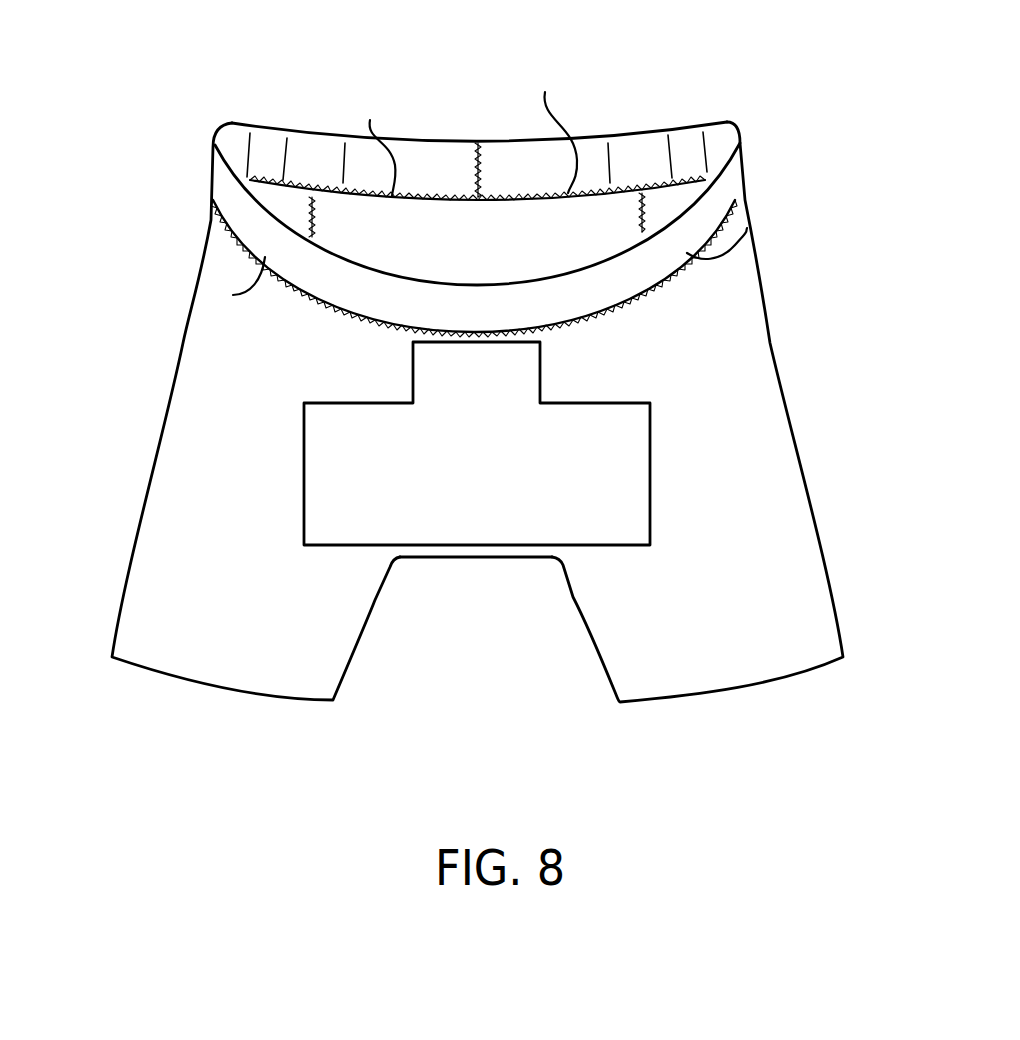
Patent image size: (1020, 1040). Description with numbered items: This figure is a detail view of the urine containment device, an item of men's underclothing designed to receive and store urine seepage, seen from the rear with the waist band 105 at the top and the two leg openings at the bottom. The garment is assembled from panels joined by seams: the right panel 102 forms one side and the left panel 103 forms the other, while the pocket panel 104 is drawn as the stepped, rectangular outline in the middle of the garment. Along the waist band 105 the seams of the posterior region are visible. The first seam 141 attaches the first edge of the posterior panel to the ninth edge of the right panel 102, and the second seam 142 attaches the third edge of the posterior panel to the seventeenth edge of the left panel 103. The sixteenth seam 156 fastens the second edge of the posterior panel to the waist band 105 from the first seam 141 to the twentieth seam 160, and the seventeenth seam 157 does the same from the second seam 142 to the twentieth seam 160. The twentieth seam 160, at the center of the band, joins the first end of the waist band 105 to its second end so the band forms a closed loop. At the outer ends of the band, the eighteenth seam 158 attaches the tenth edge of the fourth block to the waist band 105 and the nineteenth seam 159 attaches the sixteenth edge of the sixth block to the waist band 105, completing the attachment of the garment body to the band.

The right panel 102 is at (185, 632).
The left panel 103 is at (798, 625).
The pocket panel 104 is at (470, 517).
The waist band 105 is at (747, 163).
The first seam 141 is at (313, 220).
The second seam 142 is at (640, 212).
The sixteenth seam 156 is at (374, 136).
The seventeenth seam 157 is at (546, 118).
The eighteenth seam 158 is at (233, 295).
The nineteenth seam 159 is at (743, 230).
The twentieth seam 160 is at (481, 145).